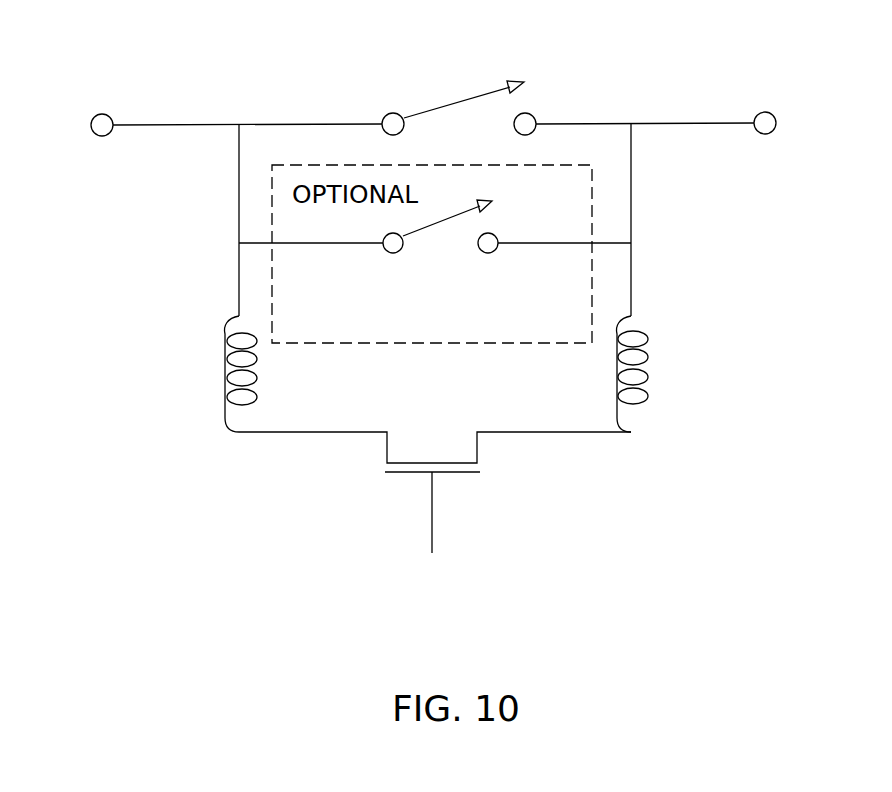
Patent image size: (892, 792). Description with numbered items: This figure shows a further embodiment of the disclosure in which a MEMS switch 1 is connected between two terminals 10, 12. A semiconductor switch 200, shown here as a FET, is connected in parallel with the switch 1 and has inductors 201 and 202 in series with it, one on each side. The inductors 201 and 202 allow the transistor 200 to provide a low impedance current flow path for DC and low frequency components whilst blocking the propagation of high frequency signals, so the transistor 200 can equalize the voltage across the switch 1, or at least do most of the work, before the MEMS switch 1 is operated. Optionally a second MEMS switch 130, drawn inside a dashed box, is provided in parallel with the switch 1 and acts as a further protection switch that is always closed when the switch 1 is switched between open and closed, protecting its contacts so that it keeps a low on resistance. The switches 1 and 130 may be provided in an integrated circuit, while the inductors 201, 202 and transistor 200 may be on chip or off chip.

The switch 1 is at (452, 80).
The first terminal 10 is at (95, 115).
The second terminal 12 is at (772, 110).
The second MEMS switch 130 is at (433, 243).
The semiconductor switch 200 is at (455, 477).
The inductor 201 is at (225, 372).
The inductor 202 is at (650, 375).